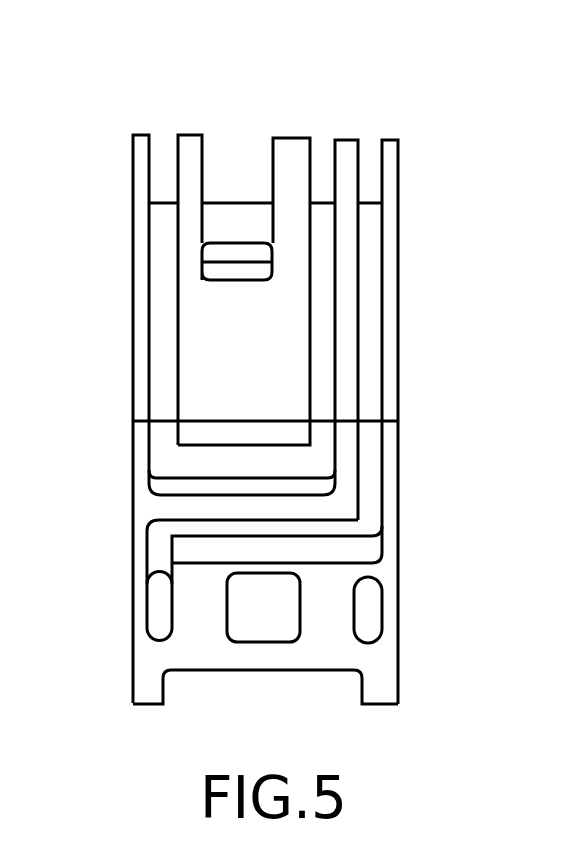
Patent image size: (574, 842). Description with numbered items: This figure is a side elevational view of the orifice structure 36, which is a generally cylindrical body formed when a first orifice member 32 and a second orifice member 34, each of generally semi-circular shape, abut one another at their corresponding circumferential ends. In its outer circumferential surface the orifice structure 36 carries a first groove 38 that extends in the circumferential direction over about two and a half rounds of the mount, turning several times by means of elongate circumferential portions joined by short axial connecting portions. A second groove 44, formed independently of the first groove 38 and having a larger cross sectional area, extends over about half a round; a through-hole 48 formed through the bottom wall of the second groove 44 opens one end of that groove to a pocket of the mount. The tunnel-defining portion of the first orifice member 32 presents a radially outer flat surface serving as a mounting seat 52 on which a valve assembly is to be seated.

The first orifice member 32 is at (440, 518).
The second orifice member 34 is at (432, 214).
The orifice structure 36 is at (93, 133).
The first groove 38 is at (149, 317).
The second groove 44 is at (273, 158).
The through-hole 48 is at (215, 272).
The mounting seat 52 is at (220, 672).